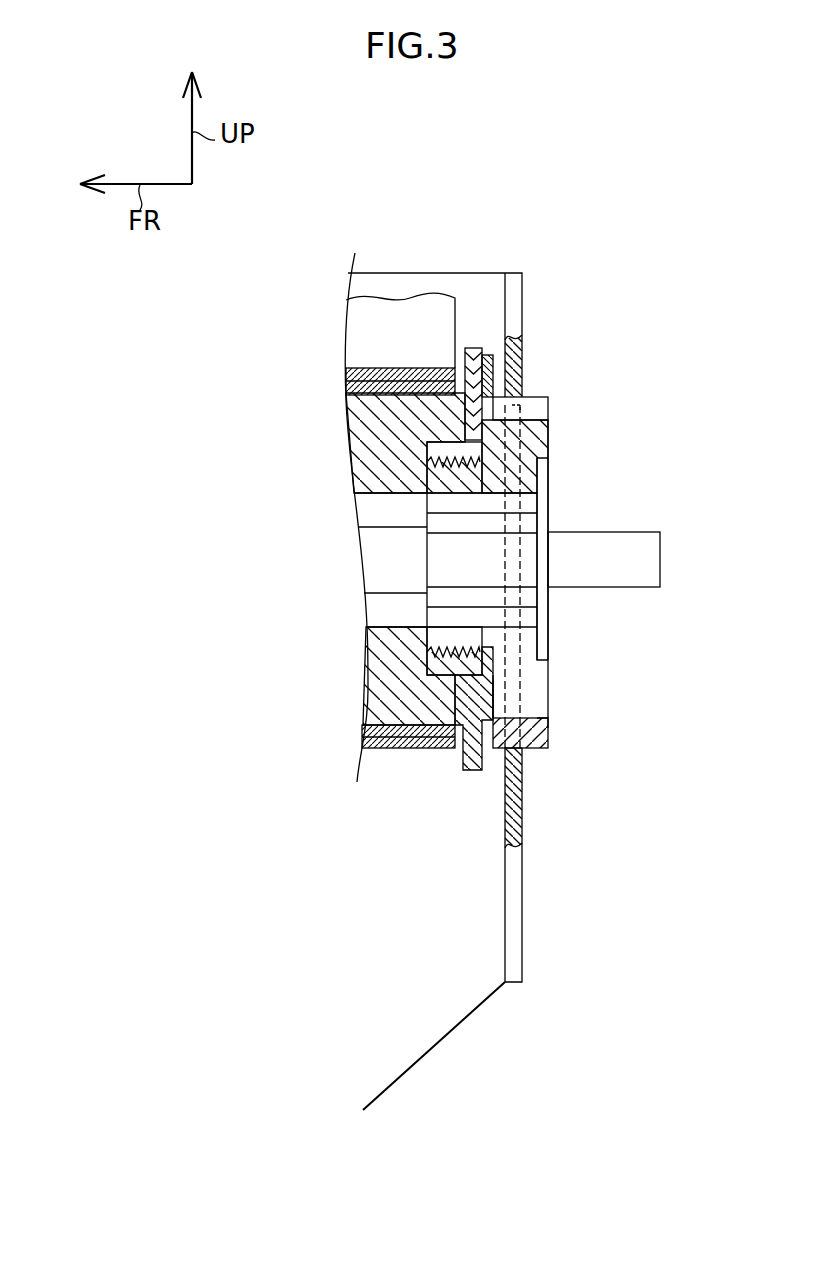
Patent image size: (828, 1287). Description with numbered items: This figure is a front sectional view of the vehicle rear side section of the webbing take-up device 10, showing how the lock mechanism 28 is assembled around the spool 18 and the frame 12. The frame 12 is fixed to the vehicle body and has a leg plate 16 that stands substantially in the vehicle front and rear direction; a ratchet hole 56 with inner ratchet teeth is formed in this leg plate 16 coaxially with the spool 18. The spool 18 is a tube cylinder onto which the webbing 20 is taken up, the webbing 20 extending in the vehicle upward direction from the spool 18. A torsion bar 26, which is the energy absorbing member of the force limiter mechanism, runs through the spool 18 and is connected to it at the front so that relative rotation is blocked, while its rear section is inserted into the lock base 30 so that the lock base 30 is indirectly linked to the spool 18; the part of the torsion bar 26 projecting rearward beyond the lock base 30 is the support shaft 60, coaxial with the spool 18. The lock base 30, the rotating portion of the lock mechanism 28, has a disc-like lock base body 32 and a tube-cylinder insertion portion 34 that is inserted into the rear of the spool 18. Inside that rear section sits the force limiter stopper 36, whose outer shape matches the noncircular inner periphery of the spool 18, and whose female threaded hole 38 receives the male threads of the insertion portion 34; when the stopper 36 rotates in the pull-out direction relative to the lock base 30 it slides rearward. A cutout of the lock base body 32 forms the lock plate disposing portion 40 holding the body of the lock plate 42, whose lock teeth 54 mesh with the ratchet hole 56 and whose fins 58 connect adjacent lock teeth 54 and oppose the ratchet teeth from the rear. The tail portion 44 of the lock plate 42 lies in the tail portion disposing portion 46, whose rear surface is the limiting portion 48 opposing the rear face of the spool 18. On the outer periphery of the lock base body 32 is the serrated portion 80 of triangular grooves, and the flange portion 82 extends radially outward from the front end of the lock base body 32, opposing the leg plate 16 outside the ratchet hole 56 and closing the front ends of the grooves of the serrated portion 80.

The webbing take-up device 10 is at (531, 224).
The frame 12 is at (430, 1057).
The leg plate 16 is at (523, 952).
The spool 18 is at (388, 694).
The webbing 20 is at (413, 315).
The torsion bar 26 is at (380, 560).
The lock mechanism 28 is at (570, 402).
The lock base 30 is at (550, 686).
The lock base body 32 is at (549, 668).
The insertion portion 34 is at (437, 643).
The force limiter stopper 36 is at (397, 745).
The female threaded hole 38 is at (432, 472).
The lock plate disposing portion 40 is at (551, 727).
The lock plate 42 is at (549, 720).
The tail portion 44 is at (473, 677).
The tail portion disposing portion 46 is at (487, 698).
The limiting portion 48 is at (495, 700).
The lock teeth 54 is at (538, 749).
The ratchet hole 56 is at (516, 422).
The fins 58 is at (551, 739).
The support shaft 60 is at (611, 542).
The serrated portion 80 is at (537, 397).
The flange portion 82 is at (496, 366).